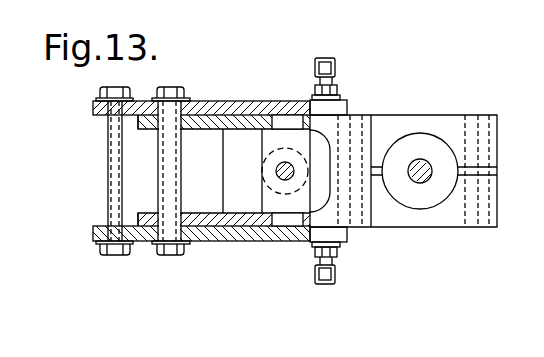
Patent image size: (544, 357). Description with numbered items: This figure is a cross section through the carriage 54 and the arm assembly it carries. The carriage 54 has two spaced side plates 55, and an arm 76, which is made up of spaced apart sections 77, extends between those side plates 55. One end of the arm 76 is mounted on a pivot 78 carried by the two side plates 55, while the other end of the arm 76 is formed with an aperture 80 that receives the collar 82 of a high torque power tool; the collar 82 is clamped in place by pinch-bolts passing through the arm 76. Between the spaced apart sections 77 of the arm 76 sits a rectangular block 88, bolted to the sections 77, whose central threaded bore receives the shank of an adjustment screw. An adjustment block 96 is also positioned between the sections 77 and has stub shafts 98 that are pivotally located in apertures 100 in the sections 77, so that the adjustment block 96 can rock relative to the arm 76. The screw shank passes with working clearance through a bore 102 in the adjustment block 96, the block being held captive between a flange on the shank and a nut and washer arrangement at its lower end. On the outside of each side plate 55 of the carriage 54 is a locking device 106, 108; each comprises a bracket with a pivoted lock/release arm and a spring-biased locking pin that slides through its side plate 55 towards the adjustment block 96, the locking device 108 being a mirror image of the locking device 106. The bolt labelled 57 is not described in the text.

The carriage 54 is at (201, 242).
The side plates 55 is at (96, 104).
The bolt 57 is at (107, 163).
The arm 76 is at (417, 228).
The spaced apart sections 77 is at (155, 127).
The pivot 78 is at (167, 220).
The aperture 80 is at (420, 133).
The collar 82 is at (431, 152).
The rectangular block 88 is at (228, 168).
The adjustment block 96 is at (290, 135).
The stub shafts 98 is at (283, 122).
The apertures 100 is at (267, 114).
The bore 102 is at (292, 175).
The locking device 106 is at (339, 82).
The locking device 108 is at (338, 265).